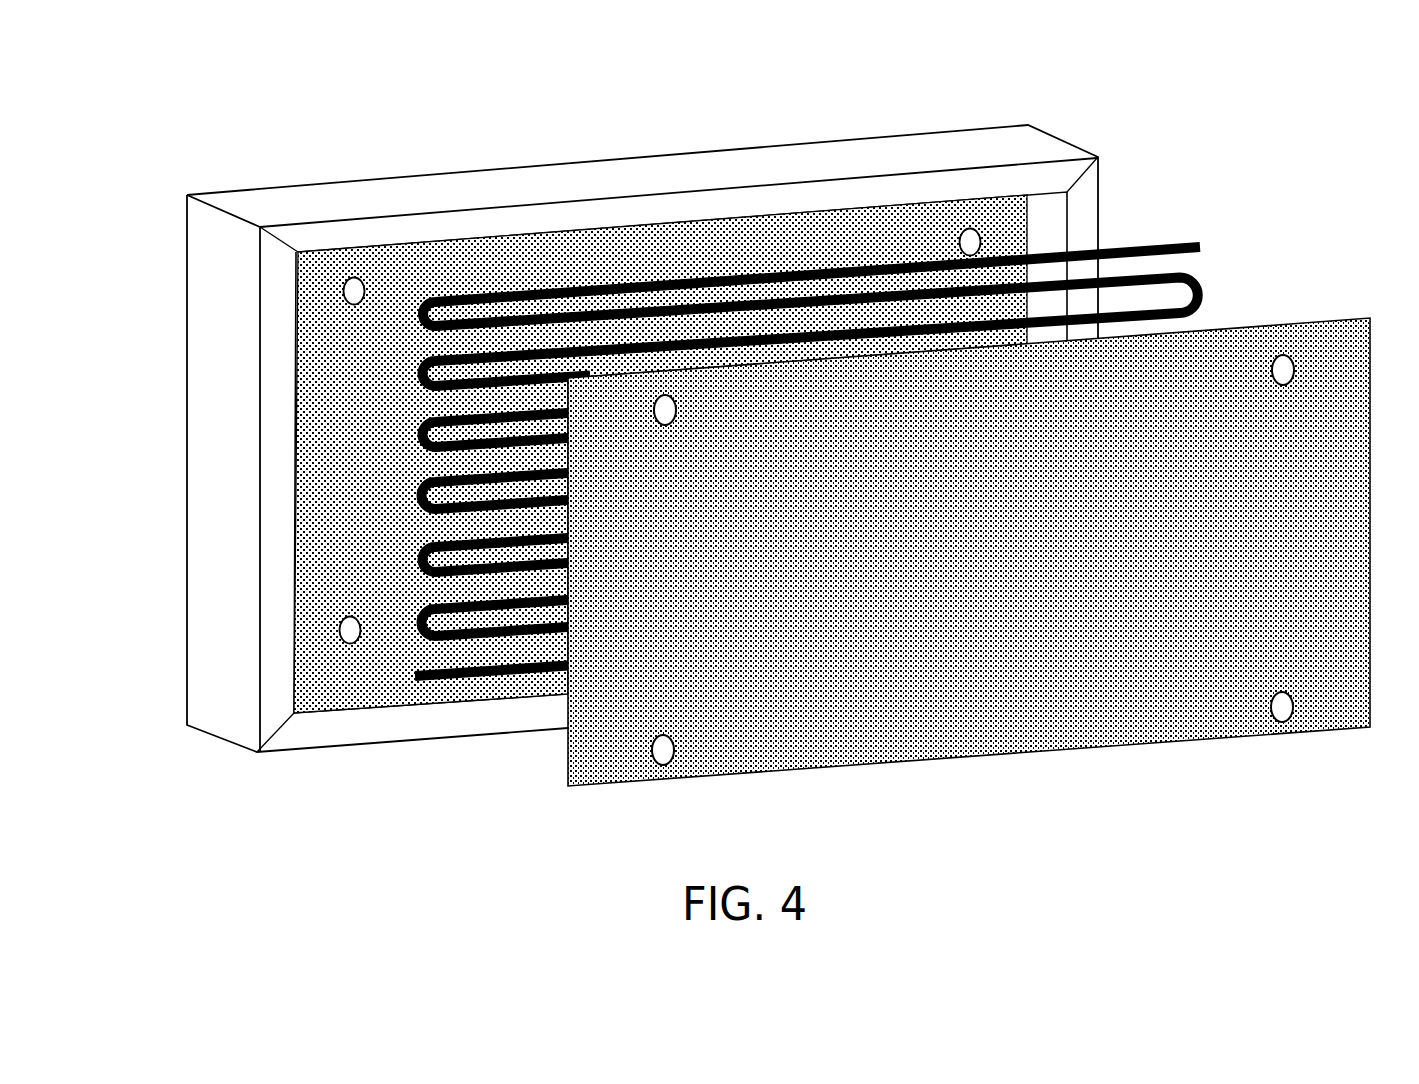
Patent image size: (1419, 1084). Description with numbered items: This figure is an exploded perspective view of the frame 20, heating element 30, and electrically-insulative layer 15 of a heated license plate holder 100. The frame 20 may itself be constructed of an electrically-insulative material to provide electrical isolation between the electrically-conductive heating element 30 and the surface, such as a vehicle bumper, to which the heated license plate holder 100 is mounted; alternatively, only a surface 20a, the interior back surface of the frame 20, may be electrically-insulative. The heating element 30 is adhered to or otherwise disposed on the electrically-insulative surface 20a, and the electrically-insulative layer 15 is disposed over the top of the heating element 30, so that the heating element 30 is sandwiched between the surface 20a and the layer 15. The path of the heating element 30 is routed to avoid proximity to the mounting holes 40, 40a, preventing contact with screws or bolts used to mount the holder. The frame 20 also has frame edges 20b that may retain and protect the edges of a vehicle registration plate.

The heated license plate holder 100 is at (247, 165).
The frame 20 is at (583, 168).
The electrically-insulative surface 20a is at (343, 687).
The frame edges 20b is at (278, 525).
The mounting holes 40 is at (355, 285).
The heating element 30 is at (1157, 238).
The electrically-insulative layer 15 is at (1332, 332).
The mounting holes 40a is at (1287, 712).